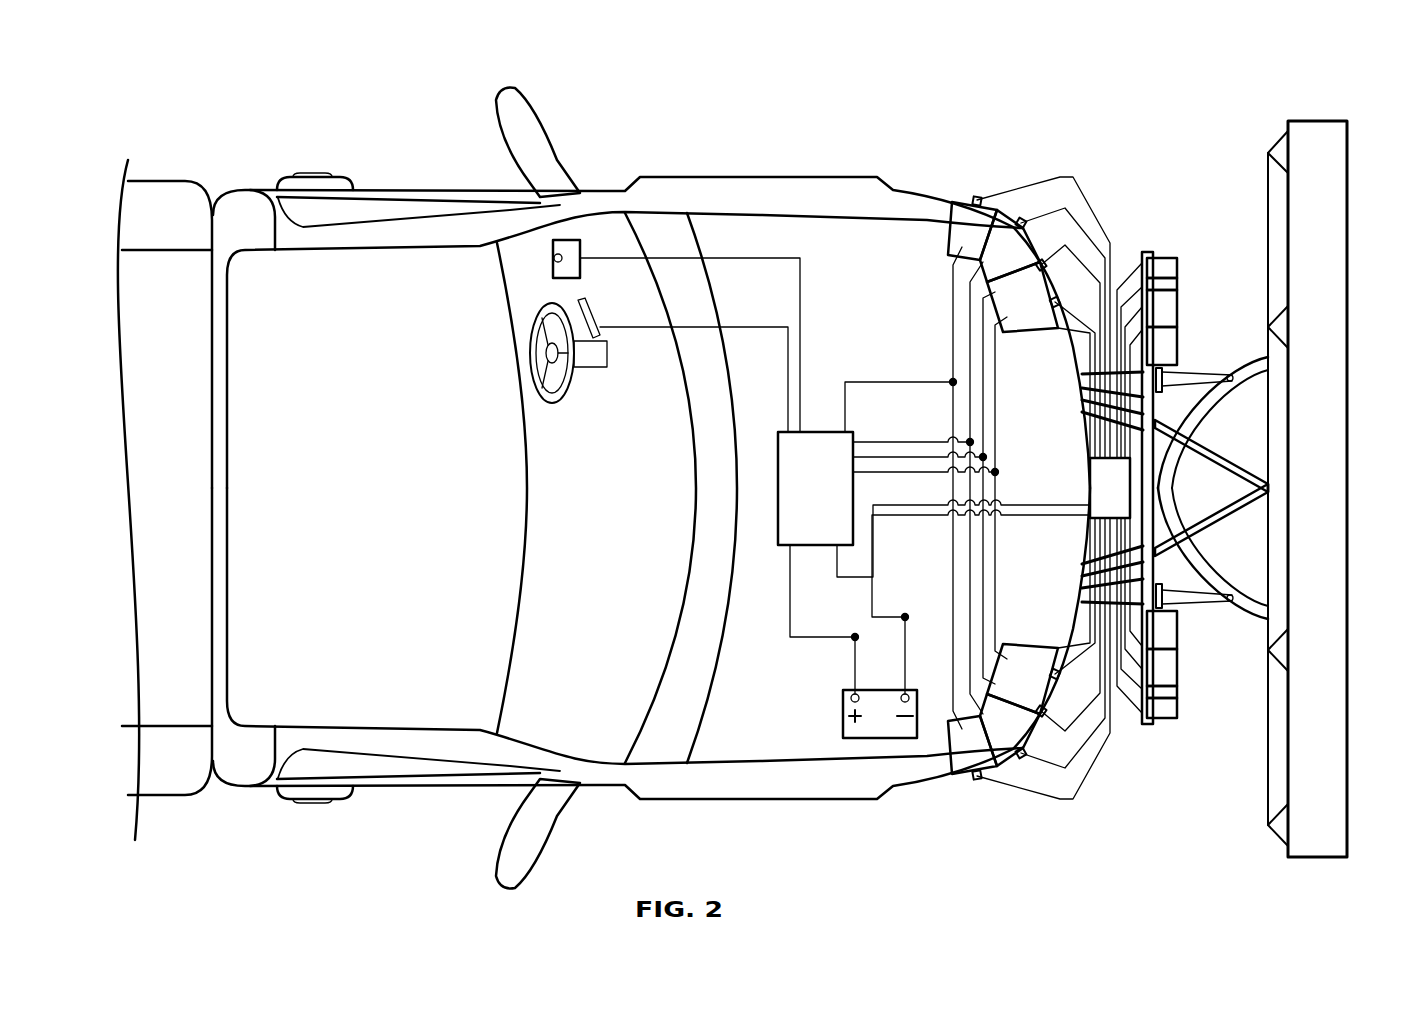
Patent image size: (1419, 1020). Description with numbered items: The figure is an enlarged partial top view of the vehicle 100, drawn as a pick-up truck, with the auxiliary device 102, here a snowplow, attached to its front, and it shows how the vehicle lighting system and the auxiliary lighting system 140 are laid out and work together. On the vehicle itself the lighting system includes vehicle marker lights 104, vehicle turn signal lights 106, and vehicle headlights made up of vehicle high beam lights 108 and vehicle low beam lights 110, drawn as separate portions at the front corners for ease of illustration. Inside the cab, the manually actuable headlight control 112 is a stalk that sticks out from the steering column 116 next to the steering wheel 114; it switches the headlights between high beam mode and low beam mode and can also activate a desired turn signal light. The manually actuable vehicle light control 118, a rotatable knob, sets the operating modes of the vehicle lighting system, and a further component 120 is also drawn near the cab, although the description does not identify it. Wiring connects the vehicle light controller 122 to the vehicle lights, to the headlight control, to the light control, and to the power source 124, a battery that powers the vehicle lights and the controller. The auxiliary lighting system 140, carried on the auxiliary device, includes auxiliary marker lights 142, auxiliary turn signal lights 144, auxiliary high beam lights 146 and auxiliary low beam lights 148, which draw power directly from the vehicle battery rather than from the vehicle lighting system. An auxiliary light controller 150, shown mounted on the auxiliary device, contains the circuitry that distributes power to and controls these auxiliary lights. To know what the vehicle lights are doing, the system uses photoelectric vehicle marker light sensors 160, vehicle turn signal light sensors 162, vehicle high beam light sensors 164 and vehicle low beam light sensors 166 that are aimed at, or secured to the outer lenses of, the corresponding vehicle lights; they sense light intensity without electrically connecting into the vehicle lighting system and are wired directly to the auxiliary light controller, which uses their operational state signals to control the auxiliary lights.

The vehicle 100 is at (388, 73).
The auxiliary device 102 is at (1352, 103).
The vehicle marker lights 104 is at (948, 232).
The vehicle turn signal lights 106 is at (1000, 212).
The vehicle high beam lights 108 is at (1040, 262).
The vehicle low beam lights 110 is at (1090, 237).
The manually actuable headlight control 112 is at (585, 305).
The steering wheel 114 is at (527, 333).
The steering column 116 is at (597, 352).
The manually actuable vehicle light control 118 is at (553, 270).
The side mirror 120 is at (580, 193).
The vehicle light controller 122 is at (813, 430).
The power source 124 is at (842, 725).
The auxiliary lighting system 140 is at (1171, 249).
The auxiliary marker lights 142 is at (1170, 268).
The auxiliary turn signal lights 144 is at (1170, 287).
The auxiliary high beam lights 146 is at (1165, 316).
The auxiliary low beam lights 148 is at (1168, 347).
The auxiliary light controller 150 is at (1087, 475).
The vehicle marker light sensors 160 is at (977, 196).
The vehicle turn signal light sensors 162 is at (1022, 219).
The vehicle high beam light sensors 164 is at (1088, 237).
The vehicle low beam light sensors 166 is at (1107, 277).